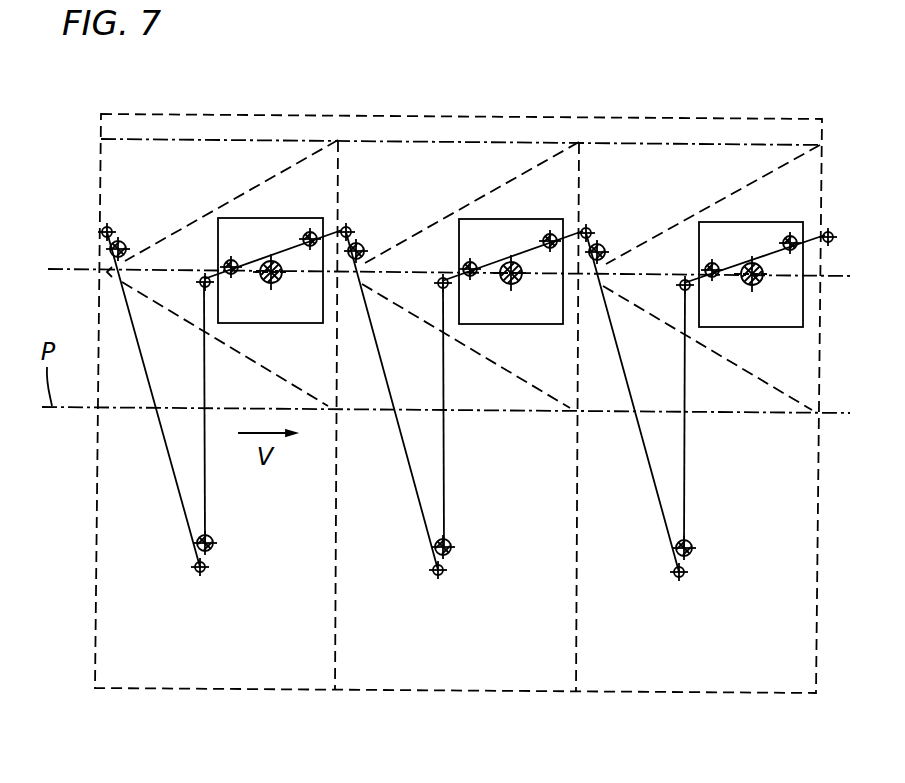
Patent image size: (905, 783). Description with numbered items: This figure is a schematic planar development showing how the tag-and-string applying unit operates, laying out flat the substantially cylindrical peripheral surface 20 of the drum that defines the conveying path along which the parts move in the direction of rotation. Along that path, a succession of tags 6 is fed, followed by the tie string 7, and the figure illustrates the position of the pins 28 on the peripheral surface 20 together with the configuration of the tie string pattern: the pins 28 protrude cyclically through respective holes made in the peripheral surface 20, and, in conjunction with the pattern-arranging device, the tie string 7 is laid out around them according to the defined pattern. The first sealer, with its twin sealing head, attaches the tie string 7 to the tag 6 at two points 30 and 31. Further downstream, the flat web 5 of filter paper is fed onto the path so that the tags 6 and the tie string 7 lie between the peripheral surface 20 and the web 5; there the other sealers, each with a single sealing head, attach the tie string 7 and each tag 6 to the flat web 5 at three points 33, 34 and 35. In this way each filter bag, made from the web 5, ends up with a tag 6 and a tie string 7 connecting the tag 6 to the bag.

The flat web of filter paper 5 is at (667, 183).
The tag 6 is at (248, 232).
The tie string 7 is at (175, 483).
The peripheral surface 20 is at (768, 663).
The pins 28 is at (102, 230).
The point 30 is at (227, 260).
The point 31 is at (306, 232).
The point 33 is at (113, 242).
The point 34 is at (211, 552).
The point 35 is at (268, 260).